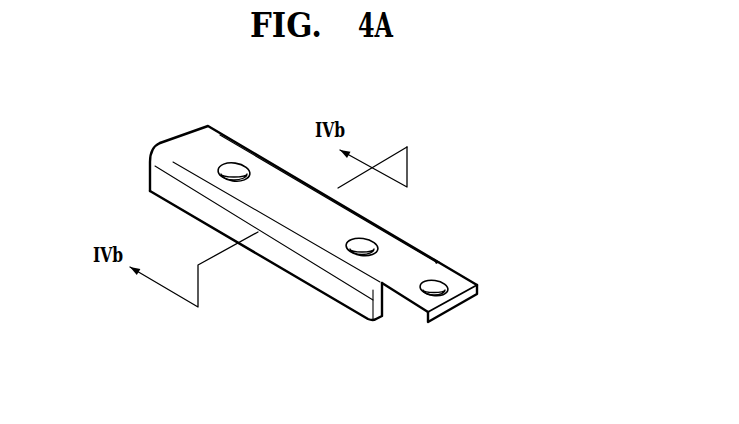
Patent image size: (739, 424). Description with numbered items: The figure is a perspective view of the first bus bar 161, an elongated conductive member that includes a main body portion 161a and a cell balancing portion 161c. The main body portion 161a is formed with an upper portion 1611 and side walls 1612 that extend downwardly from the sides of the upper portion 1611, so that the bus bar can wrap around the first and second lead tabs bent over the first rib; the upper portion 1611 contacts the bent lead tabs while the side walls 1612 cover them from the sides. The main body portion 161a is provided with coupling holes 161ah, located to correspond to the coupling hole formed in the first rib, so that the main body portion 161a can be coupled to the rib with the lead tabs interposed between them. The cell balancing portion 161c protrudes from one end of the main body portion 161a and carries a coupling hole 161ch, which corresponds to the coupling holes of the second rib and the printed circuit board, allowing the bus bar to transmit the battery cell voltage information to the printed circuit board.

The first bus bar 161 is at (476, 162).
The main body portion 161a is at (189, 143).
The cell balancing portion 161c is at (468, 282).
The upper portion 1611 is at (214, 142).
The side walls 1612 is at (358, 310).
The coupling hole 161ah is at (349, 254).
The coupling hole 161ch is at (428, 293).